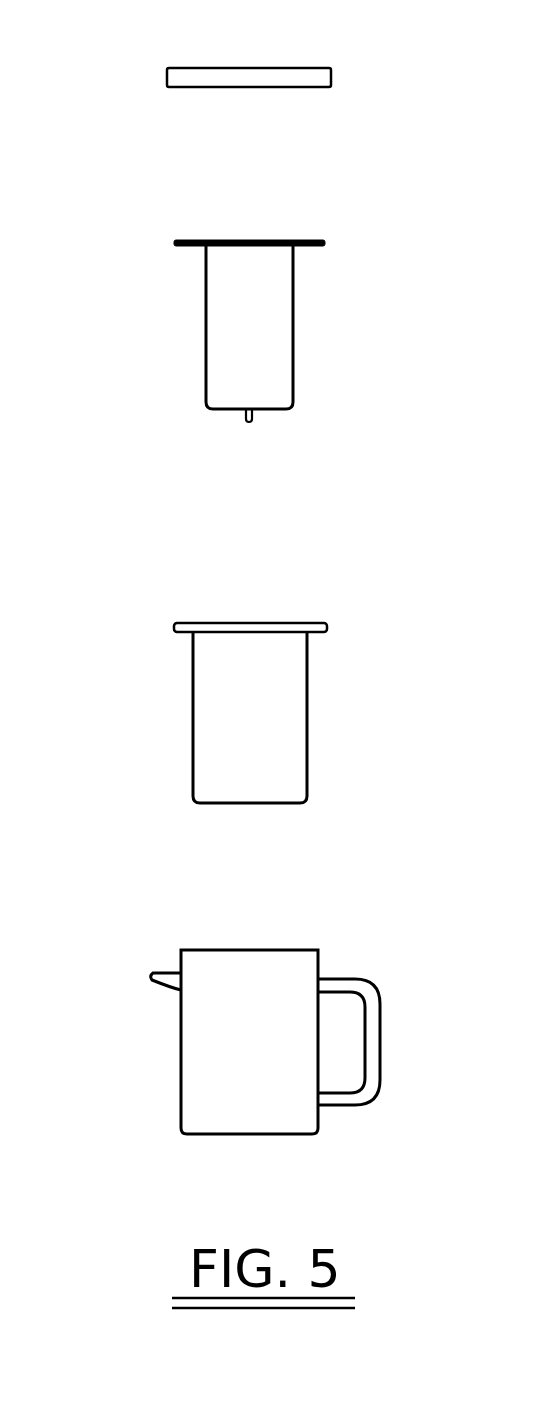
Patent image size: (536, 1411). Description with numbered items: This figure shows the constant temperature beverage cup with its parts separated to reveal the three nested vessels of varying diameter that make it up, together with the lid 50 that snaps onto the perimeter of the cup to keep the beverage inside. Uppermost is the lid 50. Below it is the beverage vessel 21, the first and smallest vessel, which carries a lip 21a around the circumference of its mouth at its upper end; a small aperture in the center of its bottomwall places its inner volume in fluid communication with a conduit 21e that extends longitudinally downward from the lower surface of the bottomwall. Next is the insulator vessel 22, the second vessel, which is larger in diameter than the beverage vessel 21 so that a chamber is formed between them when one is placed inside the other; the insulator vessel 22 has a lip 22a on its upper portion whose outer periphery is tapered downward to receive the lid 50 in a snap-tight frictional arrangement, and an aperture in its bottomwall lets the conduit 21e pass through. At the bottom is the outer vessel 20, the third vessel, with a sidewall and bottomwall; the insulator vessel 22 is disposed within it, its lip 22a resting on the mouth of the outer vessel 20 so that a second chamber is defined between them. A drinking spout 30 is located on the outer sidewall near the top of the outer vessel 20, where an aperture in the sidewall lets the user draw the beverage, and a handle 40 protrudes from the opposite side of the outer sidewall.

The outer vessel 20 is at (180, 1082).
The beverage vessel 21 is at (222, 320).
The lip 21a is at (322, 243).
The conduit 21e is at (248, 422).
The insulator vessel 22 is at (202, 758).
The lip 22a is at (322, 623).
The drinking spout 30 is at (165, 985).
The handle 40 is at (360, 990).
The lid 50 is at (178, 68).